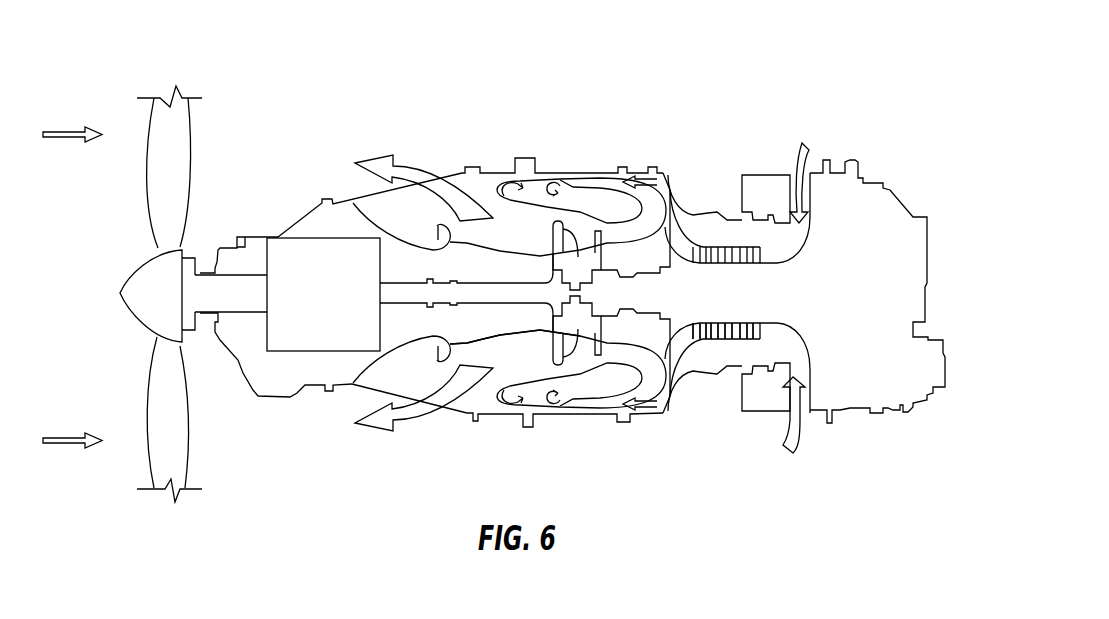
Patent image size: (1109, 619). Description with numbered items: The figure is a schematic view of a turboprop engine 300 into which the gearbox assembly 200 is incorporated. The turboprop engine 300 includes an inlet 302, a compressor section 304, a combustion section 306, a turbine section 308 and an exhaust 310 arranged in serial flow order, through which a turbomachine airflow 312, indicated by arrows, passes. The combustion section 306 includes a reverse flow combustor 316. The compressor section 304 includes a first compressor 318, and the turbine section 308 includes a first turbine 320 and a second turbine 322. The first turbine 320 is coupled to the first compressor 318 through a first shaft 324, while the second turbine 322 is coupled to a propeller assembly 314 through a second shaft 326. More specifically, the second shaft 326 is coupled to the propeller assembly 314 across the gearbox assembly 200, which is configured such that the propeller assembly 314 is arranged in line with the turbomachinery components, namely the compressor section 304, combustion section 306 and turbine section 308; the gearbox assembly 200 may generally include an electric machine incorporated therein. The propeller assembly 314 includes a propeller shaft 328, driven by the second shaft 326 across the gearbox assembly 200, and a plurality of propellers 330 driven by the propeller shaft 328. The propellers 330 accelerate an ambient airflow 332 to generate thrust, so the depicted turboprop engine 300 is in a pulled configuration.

The gearbox assembly 200 is at (307, 307).
The turboprop engine 300 is at (727, 72).
The inlet 302 is at (769, 427).
The compressor section 304 is at (706, 222).
The combustion section 306 is at (577, 173).
The turbine section 308 is at (591, 364).
The exhaust 310 is at (436, 165).
The turbomachine airflow 312 is at (450, 375).
The propeller assembly 314 is at (108, 328).
The reverse flow combustor 316 is at (543, 190).
The first compressor 318 is at (734, 350).
The first turbine 320 is at (642, 393).
The second turbine 322 is at (513, 335).
The first shaft 324 is at (630, 283).
The second shaft 326 is at (437, 295).
The propeller shaft 328 is at (250, 300).
The propellers 330 is at (163, 97).
The ambient airflow 332 is at (63, 128).